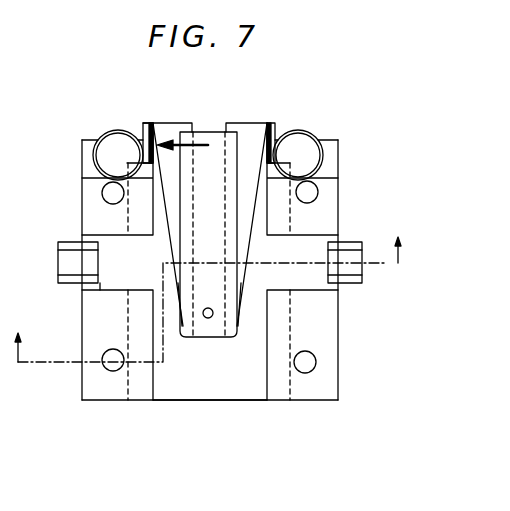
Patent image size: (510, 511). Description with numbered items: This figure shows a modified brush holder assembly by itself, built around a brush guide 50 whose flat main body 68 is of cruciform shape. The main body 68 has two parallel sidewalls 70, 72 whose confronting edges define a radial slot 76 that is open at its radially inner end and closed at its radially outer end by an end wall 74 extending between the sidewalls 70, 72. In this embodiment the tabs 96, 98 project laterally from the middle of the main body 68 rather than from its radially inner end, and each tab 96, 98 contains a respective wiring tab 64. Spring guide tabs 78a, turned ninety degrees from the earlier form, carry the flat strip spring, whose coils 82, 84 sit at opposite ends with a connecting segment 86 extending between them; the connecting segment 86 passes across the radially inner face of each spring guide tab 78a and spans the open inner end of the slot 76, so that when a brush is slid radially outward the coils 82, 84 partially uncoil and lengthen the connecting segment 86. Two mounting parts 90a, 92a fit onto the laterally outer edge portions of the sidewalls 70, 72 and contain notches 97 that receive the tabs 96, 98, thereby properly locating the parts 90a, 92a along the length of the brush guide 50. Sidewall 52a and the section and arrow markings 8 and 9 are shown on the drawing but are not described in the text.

The brush guide 50 is at (174, 401).
The side wall 52a is at (338, 185).
The wiring tab 64 is at (62, 285).
The main body 68 is at (200, 405).
The sidewall 70 is at (193, 123).
The sidewall 72 is at (247, 132).
The radially outer end wall 74 is at (235, 378).
The radial slot 76 is at (201, 132).
The spring guide tab 78a is at (141, 123).
The coil 82 is at (97, 138).
The coil 84 is at (312, 132).
The connecting segment 86 is at (165, 212).
The mounting part 90a is at (93, 370).
The mounting part 92a is at (318, 222).
The tab 96 is at (100, 283).
The notch 97 is at (123, 283).
The tab 98 is at (308, 282).
The direction arrow 9 is at (178, 142).
The section line 8- 8 is at (210, 285).